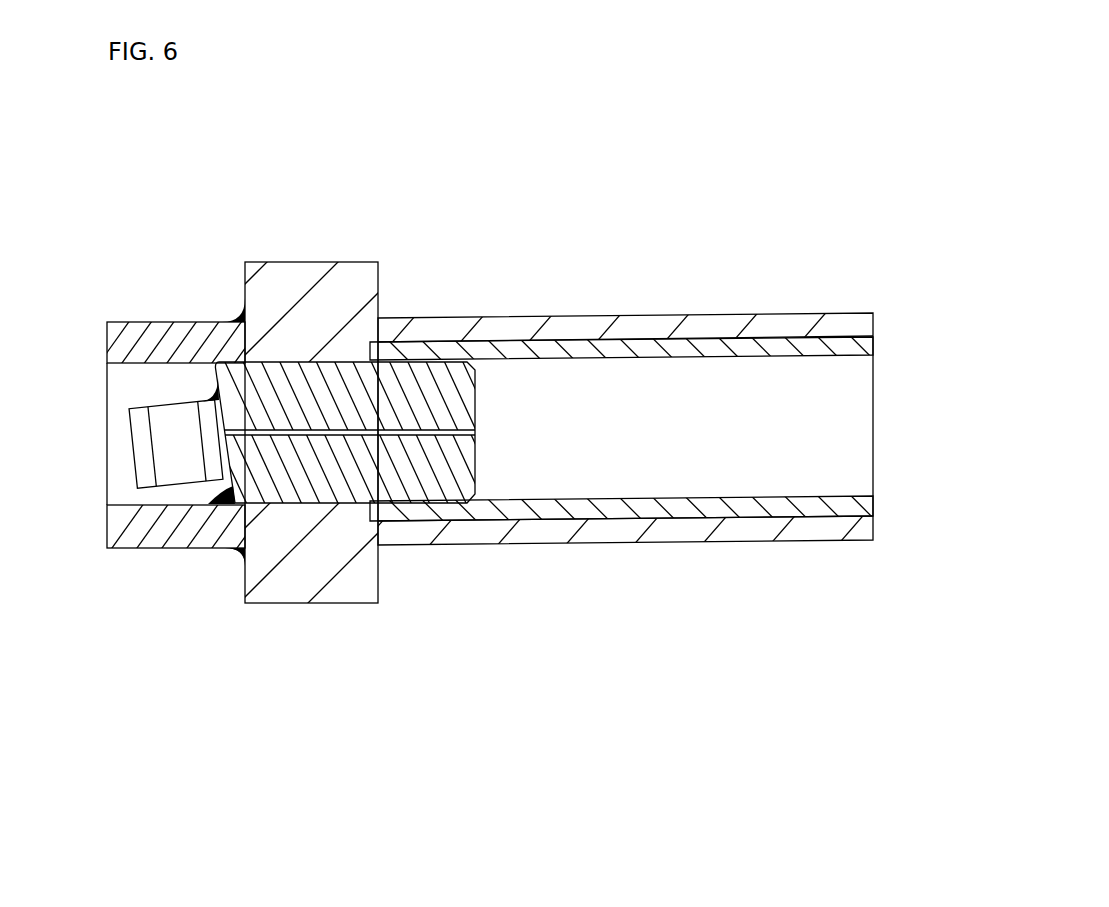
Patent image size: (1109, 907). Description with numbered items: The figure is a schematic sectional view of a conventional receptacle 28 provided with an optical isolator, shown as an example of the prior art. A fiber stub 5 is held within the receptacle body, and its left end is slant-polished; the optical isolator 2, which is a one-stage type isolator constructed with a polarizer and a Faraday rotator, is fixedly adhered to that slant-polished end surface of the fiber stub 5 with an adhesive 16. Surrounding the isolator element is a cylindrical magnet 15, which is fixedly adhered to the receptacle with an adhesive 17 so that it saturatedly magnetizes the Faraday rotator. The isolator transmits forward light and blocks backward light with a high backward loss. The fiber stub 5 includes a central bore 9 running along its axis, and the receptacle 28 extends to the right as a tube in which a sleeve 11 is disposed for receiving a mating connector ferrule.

The optical isolator 2 is at (160, 390).
The fiber stub 5 is at (365, 468).
The optical fiber 9 is at (423, 432).
The inner tube 11 is at (672, 507).
The cylindrical magnet 15 is at (127, 526).
The adhesive 16 is at (220, 502).
The adhesive 17 is at (230, 575).
The receptacle provided with an optical isolator 28 is at (705, 222).